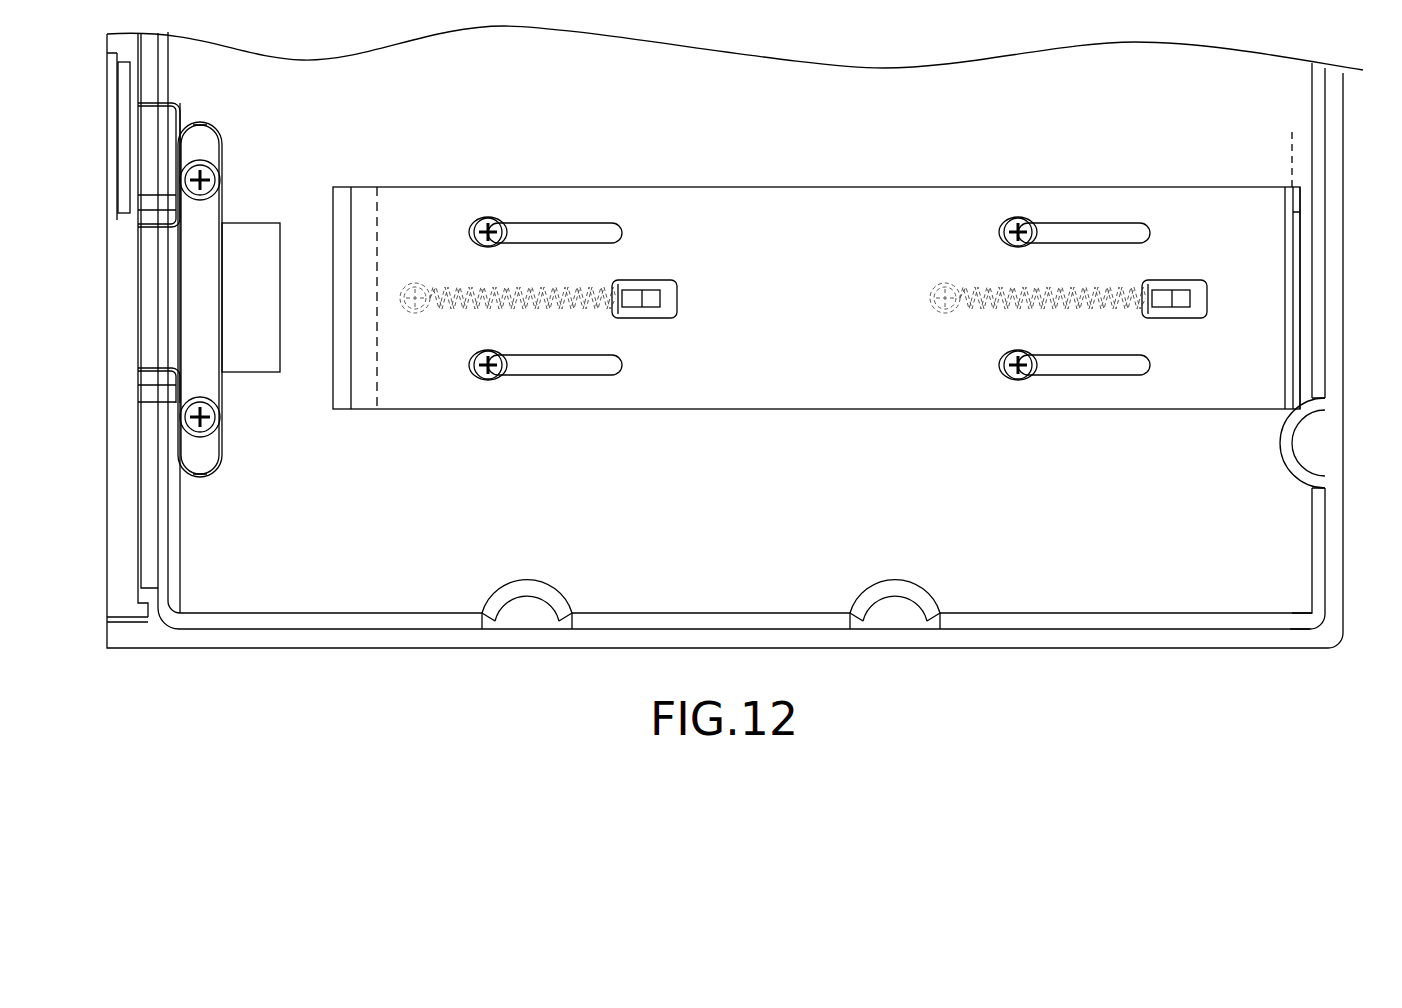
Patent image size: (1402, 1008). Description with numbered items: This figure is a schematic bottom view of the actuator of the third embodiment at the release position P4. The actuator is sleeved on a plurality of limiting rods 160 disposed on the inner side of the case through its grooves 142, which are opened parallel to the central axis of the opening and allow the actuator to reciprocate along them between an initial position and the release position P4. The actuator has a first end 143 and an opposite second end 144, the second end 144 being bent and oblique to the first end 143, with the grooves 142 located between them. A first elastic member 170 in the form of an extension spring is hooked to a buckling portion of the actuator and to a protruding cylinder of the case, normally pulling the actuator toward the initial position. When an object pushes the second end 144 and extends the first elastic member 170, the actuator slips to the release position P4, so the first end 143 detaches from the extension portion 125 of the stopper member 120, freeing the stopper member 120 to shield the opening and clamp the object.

The stopper member 120 is at (225, 130).
The extension portion 125 is at (256, 232).
The grooves 142 is at (540, 230).
The first end 143 is at (377, 200).
The second end 144 is at (1295, 267).
The limiting rod 160 is at (488, 215).
The first elastic member 170 is at (462, 286).
The release position P4 is at (1292, 145).